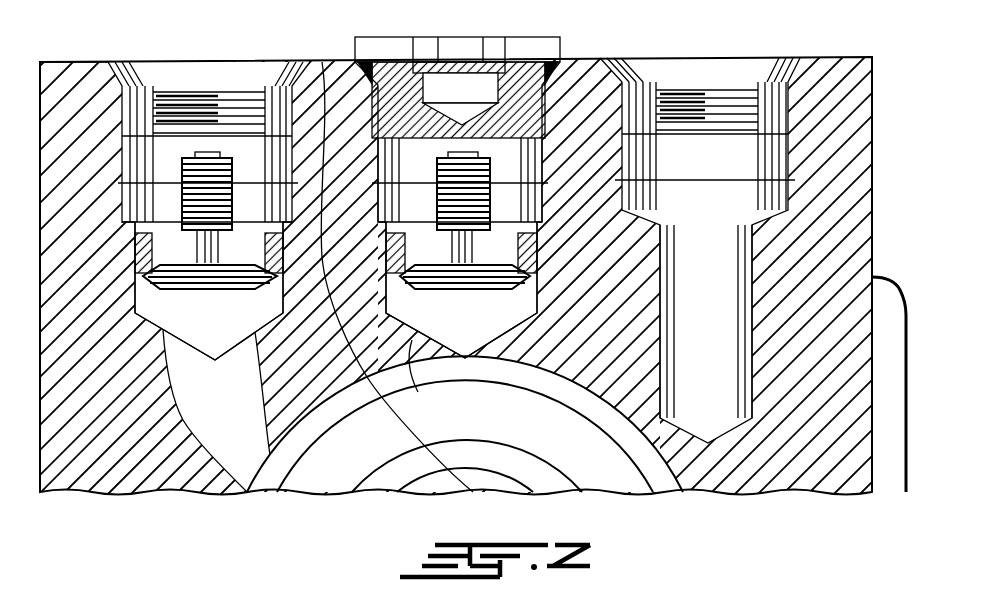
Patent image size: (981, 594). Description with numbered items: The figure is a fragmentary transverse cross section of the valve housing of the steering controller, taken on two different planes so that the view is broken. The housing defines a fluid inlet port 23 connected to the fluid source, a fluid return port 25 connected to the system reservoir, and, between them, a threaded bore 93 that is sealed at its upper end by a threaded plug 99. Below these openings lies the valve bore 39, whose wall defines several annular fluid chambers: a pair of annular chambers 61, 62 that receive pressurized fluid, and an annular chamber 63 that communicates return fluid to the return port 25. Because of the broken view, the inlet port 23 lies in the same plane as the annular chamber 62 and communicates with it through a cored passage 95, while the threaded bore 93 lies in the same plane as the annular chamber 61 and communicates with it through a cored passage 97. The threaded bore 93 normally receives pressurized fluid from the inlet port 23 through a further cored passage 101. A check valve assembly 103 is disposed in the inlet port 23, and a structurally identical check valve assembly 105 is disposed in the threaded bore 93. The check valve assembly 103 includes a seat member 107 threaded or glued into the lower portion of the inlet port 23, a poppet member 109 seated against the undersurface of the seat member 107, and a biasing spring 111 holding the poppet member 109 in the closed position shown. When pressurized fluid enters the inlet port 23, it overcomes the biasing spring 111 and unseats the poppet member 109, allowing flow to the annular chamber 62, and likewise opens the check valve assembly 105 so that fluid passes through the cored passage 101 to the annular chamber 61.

The fluid inlet port 23 is at (172, 102).
The fluid return port 25 is at (735, 100).
The valve bore 39 is at (632, 461).
The annular chamber 61 is at (543, 378).
The annular chamber 62 is at (321, 435).
The annular chamber 63 is at (738, 349).
The threaded bore 93 is at (513, 165).
The cored passage 95 is at (205, 380).
The cored passage 97 is at (428, 379).
The threaded plug 99 is at (398, 72).
The cored passage 101 is at (348, 200).
The check valve assembly 103 is at (140, 300).
The check valve assembly 105 is at (515, 293).
The seat member 107 is at (137, 252).
The poppet member 109 is at (250, 393).
The biasing spring 111 is at (125, 198).